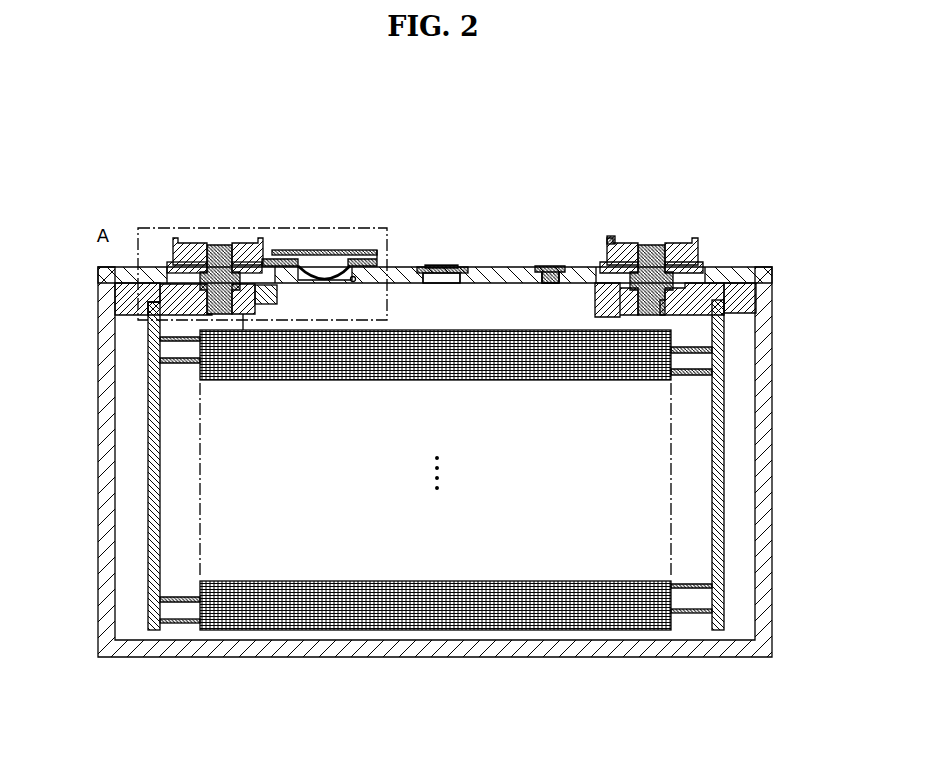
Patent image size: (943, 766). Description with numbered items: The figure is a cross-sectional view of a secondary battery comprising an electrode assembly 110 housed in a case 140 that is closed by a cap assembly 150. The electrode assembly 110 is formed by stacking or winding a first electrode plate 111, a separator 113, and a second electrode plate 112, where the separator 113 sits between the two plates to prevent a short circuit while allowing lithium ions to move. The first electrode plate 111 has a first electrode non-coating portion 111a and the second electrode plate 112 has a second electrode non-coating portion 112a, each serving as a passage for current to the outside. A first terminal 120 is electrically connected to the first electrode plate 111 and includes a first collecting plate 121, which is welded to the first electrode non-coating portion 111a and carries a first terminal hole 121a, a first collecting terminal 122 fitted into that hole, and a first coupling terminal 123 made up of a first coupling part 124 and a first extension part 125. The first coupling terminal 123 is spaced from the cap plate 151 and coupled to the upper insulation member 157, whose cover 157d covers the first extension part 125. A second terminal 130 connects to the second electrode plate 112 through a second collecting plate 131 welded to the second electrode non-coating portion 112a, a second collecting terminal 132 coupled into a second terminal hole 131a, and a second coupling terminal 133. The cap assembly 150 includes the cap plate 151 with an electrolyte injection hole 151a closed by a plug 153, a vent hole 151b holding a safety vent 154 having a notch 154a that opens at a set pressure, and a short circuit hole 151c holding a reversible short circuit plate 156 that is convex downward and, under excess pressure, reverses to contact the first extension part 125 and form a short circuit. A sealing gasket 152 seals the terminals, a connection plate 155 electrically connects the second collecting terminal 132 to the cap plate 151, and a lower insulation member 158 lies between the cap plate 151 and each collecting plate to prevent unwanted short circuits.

The electrode assembly 110 is at (425, 632).
The first electrode plate 111 is at (310, 631).
The first electrode non-coating portion 111a is at (180, 624).
The second electrode plate 112 is at (592, 630).
The second electrode non-coating portion 112a is at (692, 614).
The separator 113 is at (450, 607).
The first terminal 120 is at (142, 176).
The first collecting plate 121 is at (175, 308).
The first terminal hole 121a is at (207, 310).
The first collecting terminal 122 is at (214, 243).
The first coupling terminal 123 is at (247, 176).
The first coupling part 124 is at (243, 243).
The first extension part 125 is at (300, 262).
The second terminal 130 is at (748, 185).
The second collecting plate 131 is at (735, 243).
The second terminal hole 131a is at (662, 316).
The second collecting terminal 132 is at (658, 243).
The second coupling terminal 133 is at (682, 243).
The case 140 is at (773, 427).
The cap assembly 150 is at (509, 186).
The cap plate 151 is at (500, 267).
The electrolyte injection hole 151a is at (551, 284).
The vent hole 151b is at (437, 284).
The short circuit hole 151c is at (353, 284).
The sealing gasket 152 is at (243, 315).
The plug 153 is at (551, 266).
The safety vent 154 is at (456, 267).
The notch 154a is at (432, 265).
The connection plate 155 is at (627, 243).
The short circuit plate 156 is at (356, 259).
The upper insulation member 157 is at (327, 250).
The cover 157d is at (278, 290).
The lower insulation member 158 is at (753, 292).